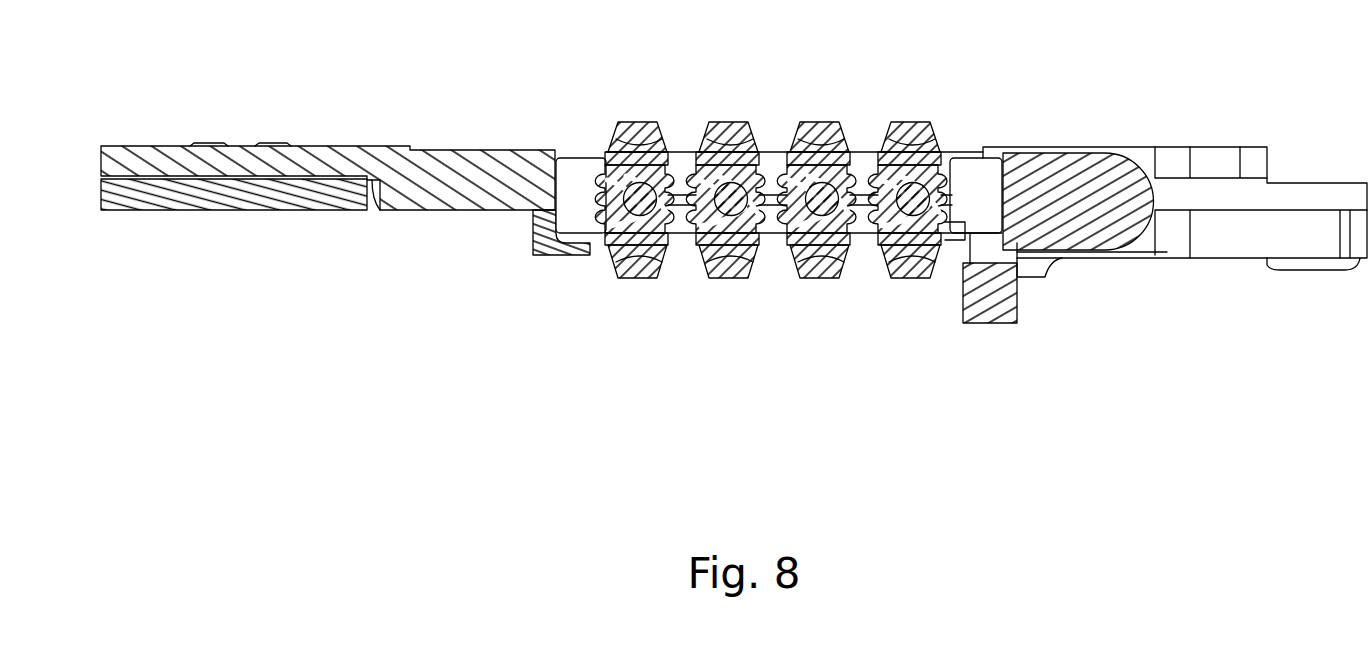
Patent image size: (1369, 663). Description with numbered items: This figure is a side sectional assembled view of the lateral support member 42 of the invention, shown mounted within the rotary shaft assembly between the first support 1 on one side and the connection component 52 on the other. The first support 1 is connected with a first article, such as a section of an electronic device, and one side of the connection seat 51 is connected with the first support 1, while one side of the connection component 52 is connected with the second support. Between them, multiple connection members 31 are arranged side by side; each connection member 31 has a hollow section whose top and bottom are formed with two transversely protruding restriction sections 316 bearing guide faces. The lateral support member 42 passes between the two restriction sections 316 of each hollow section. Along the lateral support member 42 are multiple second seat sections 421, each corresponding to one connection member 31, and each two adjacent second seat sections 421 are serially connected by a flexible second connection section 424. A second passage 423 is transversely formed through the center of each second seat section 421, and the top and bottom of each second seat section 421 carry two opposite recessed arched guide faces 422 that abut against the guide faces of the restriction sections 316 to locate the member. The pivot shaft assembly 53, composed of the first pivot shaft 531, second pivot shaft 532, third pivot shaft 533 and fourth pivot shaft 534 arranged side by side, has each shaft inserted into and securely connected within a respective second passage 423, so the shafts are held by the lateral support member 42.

The first support 1 is at (188, 200).
The connection seat 51 is at (340, 157).
The connection component 52 is at (1088, 170).
The connection member 31 is at (627, 158).
The restriction section 316 is at (603, 163).
The pivot shaft assembly 53 is at (940, 48).
The first pivot shaft 531 is at (654, 120).
The second pivot shaft 532 is at (731, 120).
The third pivot shaft 533 is at (823, 120).
The fourth pivot shaft 534 is at (912, 120).
The lateral support member 42 is at (718, 378).
The second seat section 421 is at (952, 236).
The guide face 422 is at (905, 262).
The second passage 423 is at (862, 238).
The second connection section 424 is at (735, 280).